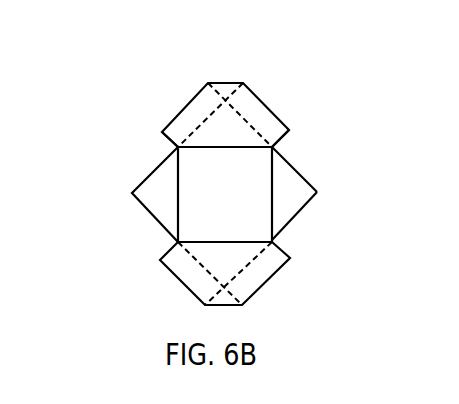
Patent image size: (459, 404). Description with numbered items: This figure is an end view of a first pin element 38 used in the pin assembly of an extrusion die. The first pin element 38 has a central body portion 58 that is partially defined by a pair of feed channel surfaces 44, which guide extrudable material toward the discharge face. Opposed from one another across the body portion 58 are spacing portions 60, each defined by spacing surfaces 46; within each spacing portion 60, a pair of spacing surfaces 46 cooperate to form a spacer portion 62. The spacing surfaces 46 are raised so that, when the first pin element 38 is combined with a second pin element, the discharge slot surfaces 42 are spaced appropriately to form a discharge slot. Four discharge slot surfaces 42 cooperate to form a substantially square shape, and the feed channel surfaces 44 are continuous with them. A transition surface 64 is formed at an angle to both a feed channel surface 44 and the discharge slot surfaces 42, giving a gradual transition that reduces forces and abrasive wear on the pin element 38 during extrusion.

The first pin element 38 is at (134, 72).
The discharge slot surface 42 is at (292, 223).
The feed channel surface 44 is at (272, 190).
The spacing surface 46 is at (267, 102).
The body portion 58 is at (197, 190).
The spacing portion 60 is at (222, 83).
The spacer portion 62 is at (163, 138).
The transition surface 64 is at (152, 206).